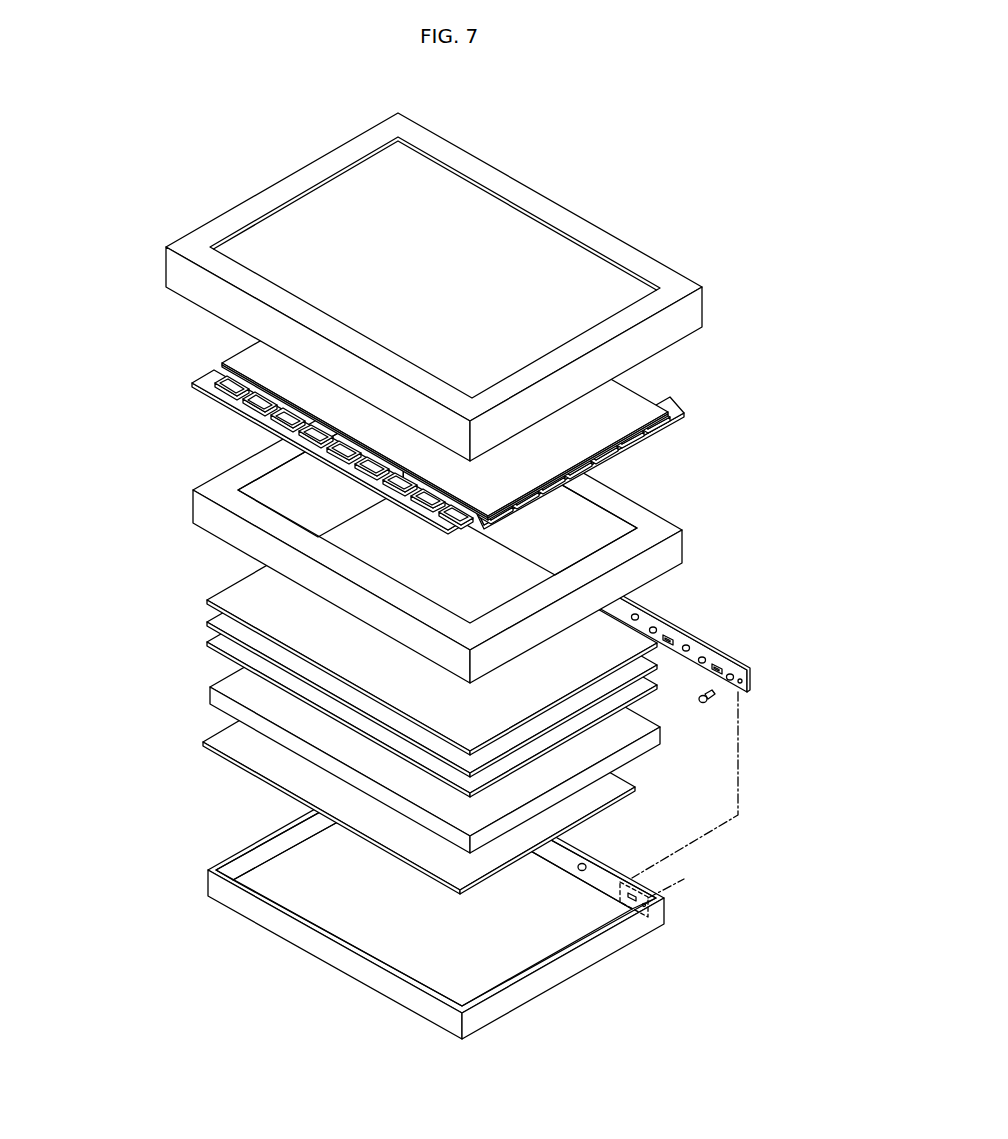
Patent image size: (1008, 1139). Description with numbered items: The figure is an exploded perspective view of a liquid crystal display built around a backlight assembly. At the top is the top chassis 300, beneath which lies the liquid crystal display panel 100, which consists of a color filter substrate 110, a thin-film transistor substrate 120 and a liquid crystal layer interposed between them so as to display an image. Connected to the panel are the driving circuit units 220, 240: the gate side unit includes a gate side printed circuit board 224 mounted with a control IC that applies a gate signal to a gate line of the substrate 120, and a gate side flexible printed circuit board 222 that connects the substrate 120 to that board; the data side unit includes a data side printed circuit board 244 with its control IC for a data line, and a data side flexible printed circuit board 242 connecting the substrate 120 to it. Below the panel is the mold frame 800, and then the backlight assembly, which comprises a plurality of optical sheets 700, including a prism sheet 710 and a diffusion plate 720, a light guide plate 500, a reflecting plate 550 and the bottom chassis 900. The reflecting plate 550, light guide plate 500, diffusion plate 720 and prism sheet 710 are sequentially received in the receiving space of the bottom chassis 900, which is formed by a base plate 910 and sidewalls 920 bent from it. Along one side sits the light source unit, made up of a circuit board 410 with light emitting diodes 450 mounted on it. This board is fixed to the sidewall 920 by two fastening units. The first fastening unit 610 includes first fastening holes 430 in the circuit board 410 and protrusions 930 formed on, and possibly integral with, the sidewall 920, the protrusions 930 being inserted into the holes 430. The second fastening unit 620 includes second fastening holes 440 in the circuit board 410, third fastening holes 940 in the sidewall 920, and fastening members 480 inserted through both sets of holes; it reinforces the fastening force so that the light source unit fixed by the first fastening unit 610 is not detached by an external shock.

The top chassis 300 is at (708, 282).
The liquid crystal display panel 100 is at (515, 389).
The color filter substrate 110 is at (636, 397).
The thin-film transistor substrate 120 is at (668, 412).
The driving circuit unit 220 is at (644, 463).
The gate side flexible printed circuit board 222 is at (672, 417).
The gate side printed circuit board 224 is at (678, 428).
The driving circuit unit 240 is at (256, 445).
The data side flexible printed circuit board 242 is at (213, 373).
The data side printed circuit board 244 is at (192, 386).
The mold frame 800 is at (684, 545).
The optical sheets 700 is at (352, 644).
The prism sheet 710 is at (207, 601).
The diffusion plate 720 is at (207, 624).
The light guide plate 500 is at (210, 690).
The reflecting plate 550 is at (618, 783).
The circuit board 410 is at (704, 738).
The first fastening holes 430 is at (668, 634).
The second fastening holes 440 is at (750, 689).
The light emitting diodes 450 is at (689, 644).
The fastening members 480 is at (720, 697).
The bottom chassis 900 is at (500, 897).
The base plate 910 is at (365, 918).
The sidewall 920 is at (353, 962).
The protrusions 930 is at (588, 863).
The third fastening holes 940 is at (640, 888).
The first fastening unit 610 is at (676, 1020).
The second fastening unit 620 is at (676, 1055).